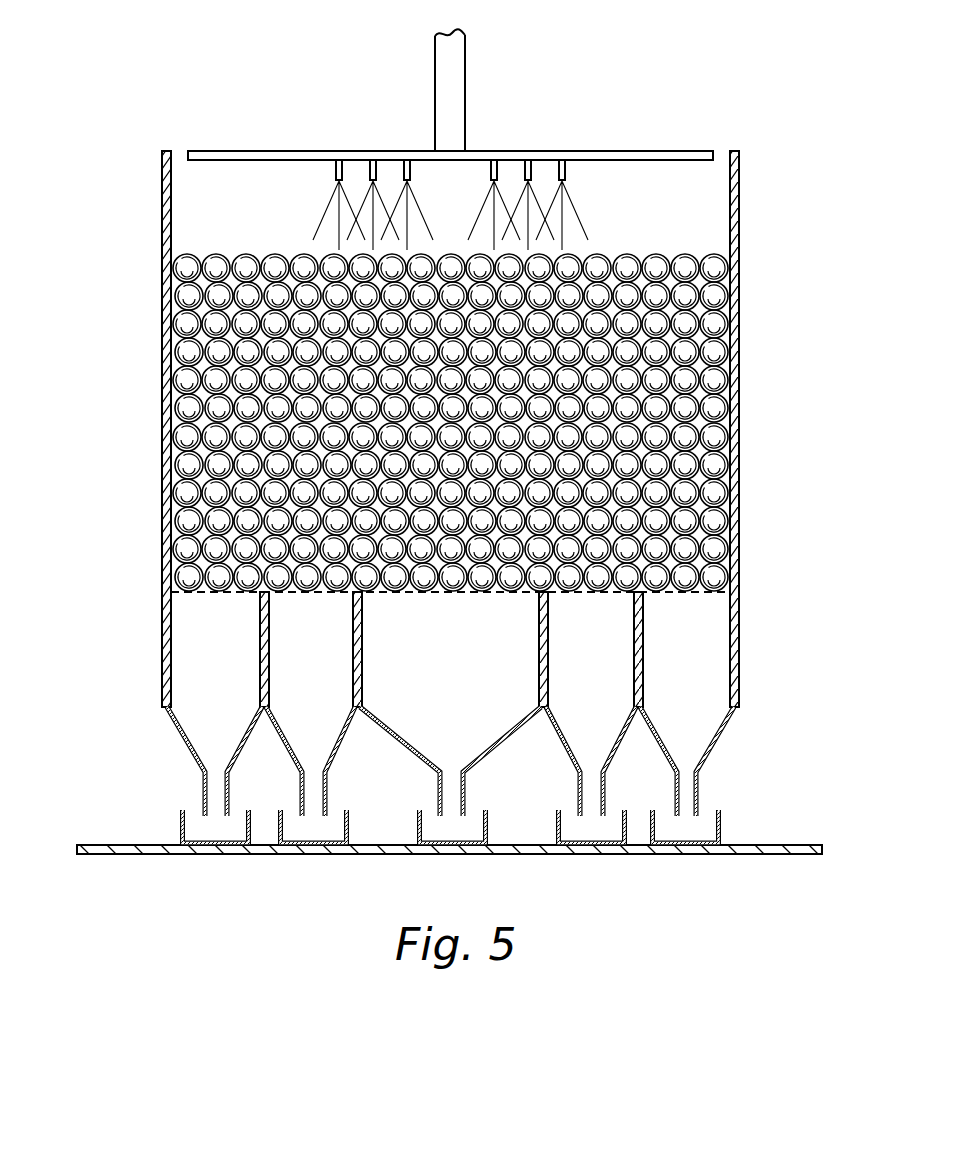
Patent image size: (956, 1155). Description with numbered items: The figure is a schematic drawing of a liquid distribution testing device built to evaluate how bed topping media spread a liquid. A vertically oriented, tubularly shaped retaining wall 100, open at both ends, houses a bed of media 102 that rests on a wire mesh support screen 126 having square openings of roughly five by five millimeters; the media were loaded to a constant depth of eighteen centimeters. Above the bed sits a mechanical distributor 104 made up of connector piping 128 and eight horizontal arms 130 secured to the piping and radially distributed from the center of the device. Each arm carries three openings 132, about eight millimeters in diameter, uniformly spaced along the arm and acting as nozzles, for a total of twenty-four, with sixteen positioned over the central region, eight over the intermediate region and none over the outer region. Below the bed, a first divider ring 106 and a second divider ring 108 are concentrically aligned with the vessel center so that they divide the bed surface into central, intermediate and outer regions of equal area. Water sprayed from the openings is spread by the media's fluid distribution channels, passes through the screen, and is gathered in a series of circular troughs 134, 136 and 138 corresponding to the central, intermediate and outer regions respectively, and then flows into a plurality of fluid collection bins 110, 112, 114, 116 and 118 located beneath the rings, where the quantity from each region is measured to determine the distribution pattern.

The retaining wall 100 is at (740, 219).
The bed of media 102 is at (445, 415).
The mechanical distributor 104 is at (556, 142).
The first divider ring 106 is at (353, 684).
The second divider ring 108 is at (260, 684).
The fluid collection bin 110 is at (180, 822).
The fluid collection bin 112 is at (348, 823).
The fluid collection bin 114 is at (488, 823).
The fluid collection bin 116 is at (628, 823).
The fluid collection bin 118 is at (722, 823).
The wire mesh support screen 126 is at (690, 594).
The connector piping 128 is at (458, 70).
The horizontal arms 130 is at (308, 151).
The openings 132 is at (335, 173).
The circular trough 134 is at (469, 665).
The circular trough 136 is at (330, 665).
The circular trough 138 is at (234, 665).